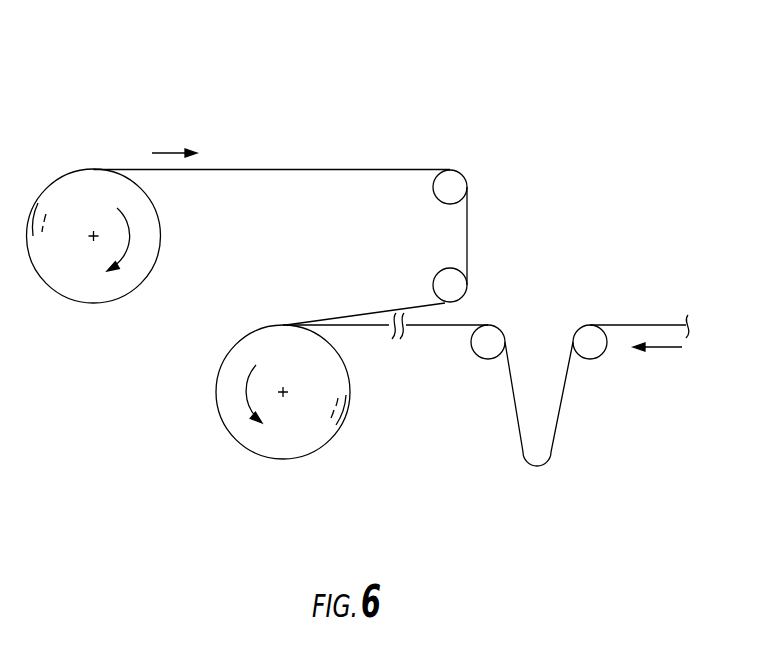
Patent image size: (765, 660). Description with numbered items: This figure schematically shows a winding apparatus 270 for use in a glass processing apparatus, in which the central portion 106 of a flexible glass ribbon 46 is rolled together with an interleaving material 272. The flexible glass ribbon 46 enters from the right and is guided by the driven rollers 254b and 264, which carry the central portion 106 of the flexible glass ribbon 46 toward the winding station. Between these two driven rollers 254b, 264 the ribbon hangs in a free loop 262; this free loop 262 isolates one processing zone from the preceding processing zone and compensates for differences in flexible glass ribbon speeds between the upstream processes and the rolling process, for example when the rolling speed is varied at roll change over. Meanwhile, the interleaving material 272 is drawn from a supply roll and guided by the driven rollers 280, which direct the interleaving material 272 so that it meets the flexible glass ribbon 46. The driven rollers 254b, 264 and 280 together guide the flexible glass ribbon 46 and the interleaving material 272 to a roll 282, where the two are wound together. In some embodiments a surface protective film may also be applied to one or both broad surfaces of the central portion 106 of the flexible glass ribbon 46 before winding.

The winding apparatus 270 is at (566, 99).
The interleaving material 272 is at (308, 170).
The driven rollers 280 is at (448, 183).
The roll 282 is at (285, 441).
The central portion 106 is at (435, 327).
The driven roller 264 is at (488, 343).
The driven roller 254b is at (590, 343).
The free loop 262 is at (510, 470).
The flexible glass ribbon 46 is at (638, 292).